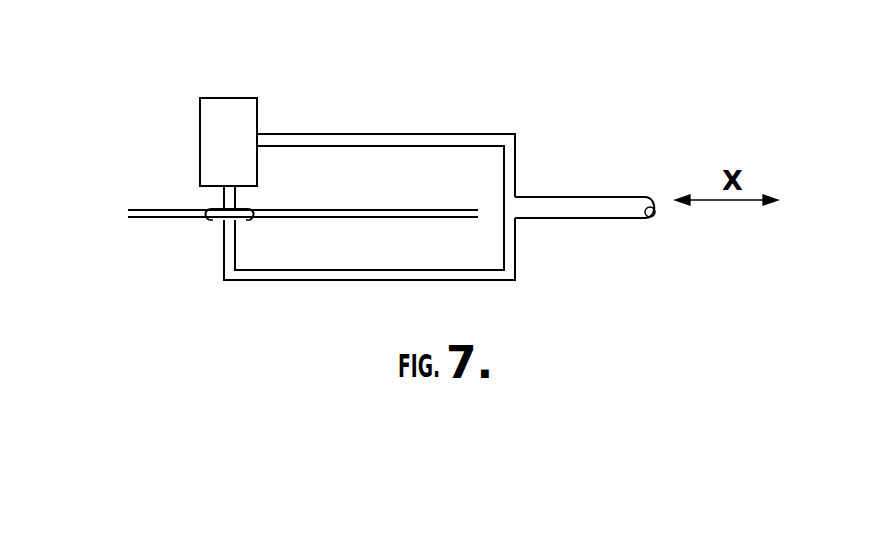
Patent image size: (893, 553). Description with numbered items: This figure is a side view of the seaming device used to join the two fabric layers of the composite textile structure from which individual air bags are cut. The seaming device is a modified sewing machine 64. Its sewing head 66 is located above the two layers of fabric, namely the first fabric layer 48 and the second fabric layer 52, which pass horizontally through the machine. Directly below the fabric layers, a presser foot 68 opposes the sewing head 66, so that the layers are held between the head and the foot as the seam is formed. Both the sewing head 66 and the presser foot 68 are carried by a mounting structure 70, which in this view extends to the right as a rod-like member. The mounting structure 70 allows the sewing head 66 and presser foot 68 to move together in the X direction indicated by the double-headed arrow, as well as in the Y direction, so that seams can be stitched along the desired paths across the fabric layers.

The sewing machine 64 is at (298, 79).
The sewing head 66 is at (200, 131).
The presser foot 68 is at (219, 222).
The first fabric layer 48 is at (148, 210).
The second fabric layer 52 is at (148, 217).
The mounting structure 70 is at (553, 197).